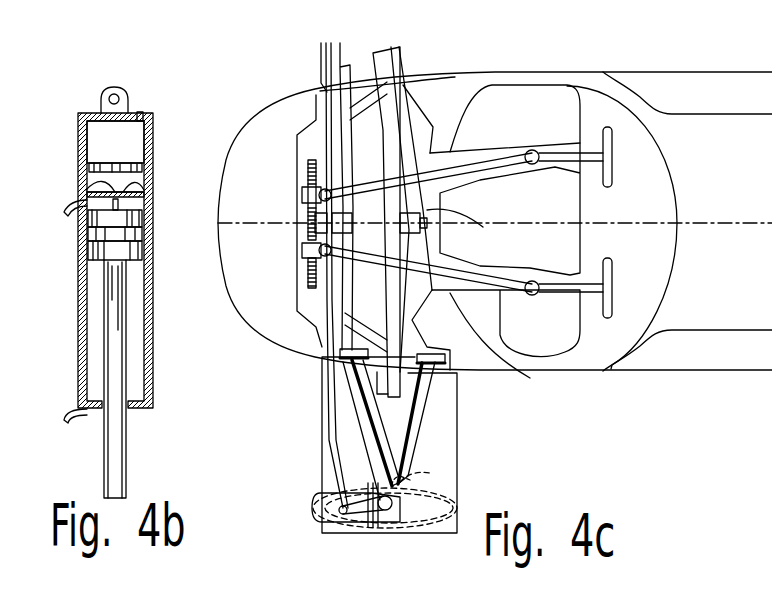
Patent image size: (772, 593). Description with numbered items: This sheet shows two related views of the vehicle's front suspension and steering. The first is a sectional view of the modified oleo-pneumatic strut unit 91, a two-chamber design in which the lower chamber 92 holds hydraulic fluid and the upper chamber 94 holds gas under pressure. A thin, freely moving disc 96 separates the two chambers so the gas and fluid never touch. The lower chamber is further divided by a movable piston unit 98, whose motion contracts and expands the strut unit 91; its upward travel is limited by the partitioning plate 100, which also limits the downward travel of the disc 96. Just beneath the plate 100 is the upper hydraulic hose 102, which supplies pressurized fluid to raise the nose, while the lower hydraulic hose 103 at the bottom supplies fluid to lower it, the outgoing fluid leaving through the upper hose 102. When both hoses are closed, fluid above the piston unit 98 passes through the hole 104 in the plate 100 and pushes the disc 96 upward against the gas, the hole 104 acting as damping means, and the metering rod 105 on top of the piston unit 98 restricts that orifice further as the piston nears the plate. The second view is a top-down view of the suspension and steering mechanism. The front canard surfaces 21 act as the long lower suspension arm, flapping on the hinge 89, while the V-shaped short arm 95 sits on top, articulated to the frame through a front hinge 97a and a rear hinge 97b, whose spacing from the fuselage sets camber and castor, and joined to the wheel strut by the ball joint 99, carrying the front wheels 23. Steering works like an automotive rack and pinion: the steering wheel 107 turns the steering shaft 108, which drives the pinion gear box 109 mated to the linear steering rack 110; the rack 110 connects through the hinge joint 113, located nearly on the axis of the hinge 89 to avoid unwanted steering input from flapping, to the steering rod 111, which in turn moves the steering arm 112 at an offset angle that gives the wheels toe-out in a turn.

In FIG. 4B, the oleo-pneumatic strut unit 91 is at (67, 341).
In FIG. 4B, the upper chamber 94 is at (98, 150).
In FIG. 4B, the disc 96 is at (136, 165).
In FIG. 4B, the hole 104 is at (103, 182).
In FIG. 4B, the partitioning plate 100 is at (137, 191).
In FIG. 4B, the upper hydraulic hose 102 is at (62, 205).
In FIG. 4B, the metering rod 105 is at (113, 204).
In FIG. 4B, the piston unit 98 is at (132, 215).
In FIG. 4B, the lower chamber 92 is at (93, 287).
In FIG. 4B, the lower hydraulic hose 103 is at (77, 425).
In FIG. 4C, the hinge 89 is at (481, 223).
In FIG. 4C, the hinge joint 113 is at (318, 228).
In FIG. 4C, the pinion gear box 109 is at (307, 252).
In FIG. 4C, the steering rack 110 is at (308, 285).
In FIG. 4C, the steering shaft 108 is at (497, 285).
In FIG. 4C, the steering wheel 107 is at (610, 318).
In FIG. 4C, the hinge 97a is at (358, 362).
In FIG. 4C, the hinge 97b is at (452, 360).
In FIG. 4C, the short arm 95 is at (425, 410).
In FIG. 4C, the steering rod 111 is at (337, 436).
In FIG. 4C, the front canard surfaces 21 is at (304, 465).
In FIG. 4C, the steering arm 112 is at (358, 512).
In FIG. 4C, the front wheels 23 is at (416, 520).
In FIG. 4C, the ball joint 99 is at (430, 473).